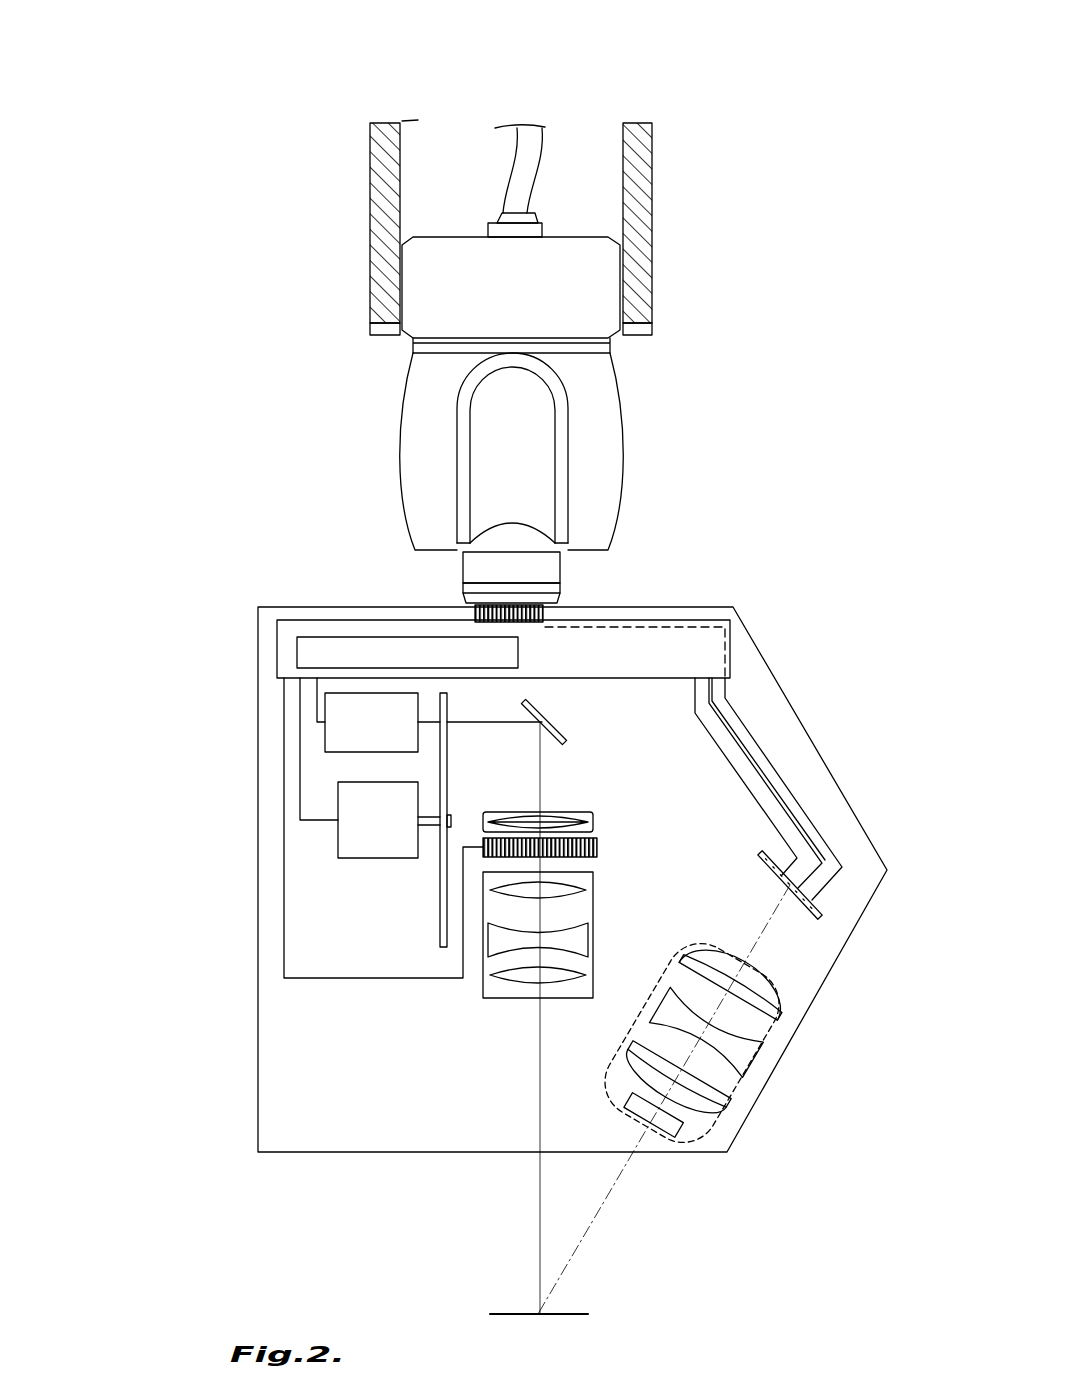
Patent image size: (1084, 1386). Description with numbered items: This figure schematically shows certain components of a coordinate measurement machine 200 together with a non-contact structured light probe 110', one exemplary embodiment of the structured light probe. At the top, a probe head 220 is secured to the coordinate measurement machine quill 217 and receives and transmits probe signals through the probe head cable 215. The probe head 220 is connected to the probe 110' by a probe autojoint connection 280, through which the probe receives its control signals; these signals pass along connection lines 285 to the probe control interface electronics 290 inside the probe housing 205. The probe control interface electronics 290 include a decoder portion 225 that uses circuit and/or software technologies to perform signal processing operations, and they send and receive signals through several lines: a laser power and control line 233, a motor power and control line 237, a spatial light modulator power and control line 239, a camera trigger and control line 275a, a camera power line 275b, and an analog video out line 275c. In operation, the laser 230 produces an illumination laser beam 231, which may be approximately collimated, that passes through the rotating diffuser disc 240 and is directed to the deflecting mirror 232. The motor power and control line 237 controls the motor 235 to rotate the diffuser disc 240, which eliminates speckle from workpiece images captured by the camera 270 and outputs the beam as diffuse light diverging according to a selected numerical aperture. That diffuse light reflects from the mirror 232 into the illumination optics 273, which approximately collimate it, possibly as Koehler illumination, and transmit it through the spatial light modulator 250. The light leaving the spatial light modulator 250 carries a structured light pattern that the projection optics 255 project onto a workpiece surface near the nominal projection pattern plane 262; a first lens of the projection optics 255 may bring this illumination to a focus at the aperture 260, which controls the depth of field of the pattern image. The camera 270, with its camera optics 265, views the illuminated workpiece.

The coordinate measurement machine 200 is at (205, 103).
The probe head cable 215 is at (543, 128).
The coordinate measurement machine quill 217 is at (652, 180).
The probe head 220 is at (402, 418).
The probe autojoint connection 280 is at (560, 577).
The connection lines 285 is at (556, 612).
The non-contact structured light probe 110' is at (519, 913).
The probe housing 205 is at (280, 606).
The decoder portion 225 is at (297, 655).
The probe control interface electronics 290 is at (725, 627).
The spatial light modulator power and control line 239 is at (284, 953).
The motor power and control line 237 is at (300, 763).
The laser power and control line 233 is at (317, 685).
The laser 230 is at (325, 713).
The motor 235 is at (338, 838).
The rotating diffuser disc 240 is at (440, 908).
The illumination laser beam 231 is at (498, 723).
The mirror 232 is at (548, 716).
The spatial light modulator 250 is at (483, 858).
The projection optics 255 is at (493, 999).
The aperture 260 is at (523, 923).
The illumination optics 273 is at (593, 822).
The camera trigger and control line 275a is at (723, 750).
The camera power line 275b is at (757, 770).
The analog video out line 275c is at (798, 800).
The camera 270 is at (822, 905).
The camera optics 265 is at (785, 1015).
The nominal projection pattern plane 262 is at (575, 1314).